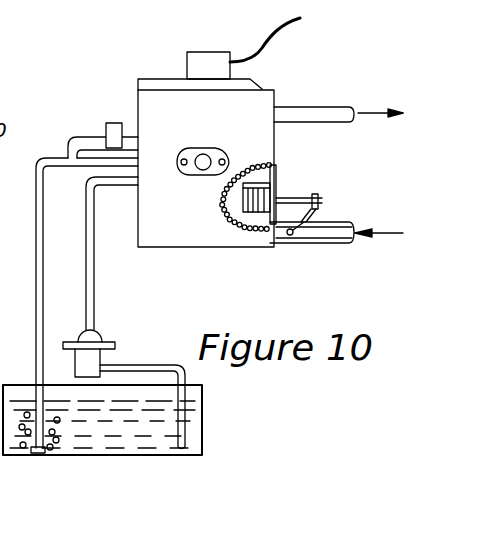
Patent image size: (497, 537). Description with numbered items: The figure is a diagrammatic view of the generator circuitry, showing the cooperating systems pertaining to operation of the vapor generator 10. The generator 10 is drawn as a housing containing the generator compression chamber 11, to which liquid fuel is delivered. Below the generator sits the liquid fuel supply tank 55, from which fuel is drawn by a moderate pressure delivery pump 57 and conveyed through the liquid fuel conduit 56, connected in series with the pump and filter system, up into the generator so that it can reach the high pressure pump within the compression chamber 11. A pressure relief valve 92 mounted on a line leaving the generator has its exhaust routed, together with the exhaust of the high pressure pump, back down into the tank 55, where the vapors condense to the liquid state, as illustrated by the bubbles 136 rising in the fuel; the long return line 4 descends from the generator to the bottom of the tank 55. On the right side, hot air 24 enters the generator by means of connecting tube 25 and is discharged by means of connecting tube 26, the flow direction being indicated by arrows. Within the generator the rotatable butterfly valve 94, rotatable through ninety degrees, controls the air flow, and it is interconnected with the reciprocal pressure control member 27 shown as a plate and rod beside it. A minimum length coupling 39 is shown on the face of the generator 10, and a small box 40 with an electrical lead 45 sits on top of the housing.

The air supply pipe 4 is at (36, 190).
The vapor generator 10 is at (172, 238).
The generator compression chamber 11 is at (237, 208).
The hot air 24 is at (367, 106).
The connecting tube 25 is at (333, 245).
The connecting tube 26 is at (292, 107).
The pressure control member 27 is at (282, 188).
The minimum length coupling 39 is at (195, 152).
The terminal box 40 is at (190, 52).
The electrical cable 45 is at (262, 40).
The liquid fuel supply tank 55 is at (137, 449).
The liquid fuel conduit 56 is at (95, 312).
The moderate pressure delivery pump 57 is at (116, 344).
The pressure relief valve 92 is at (105, 128).
The butterfly air-flow control 94 is at (287, 238).
The bubbles 136 is at (24, 452).